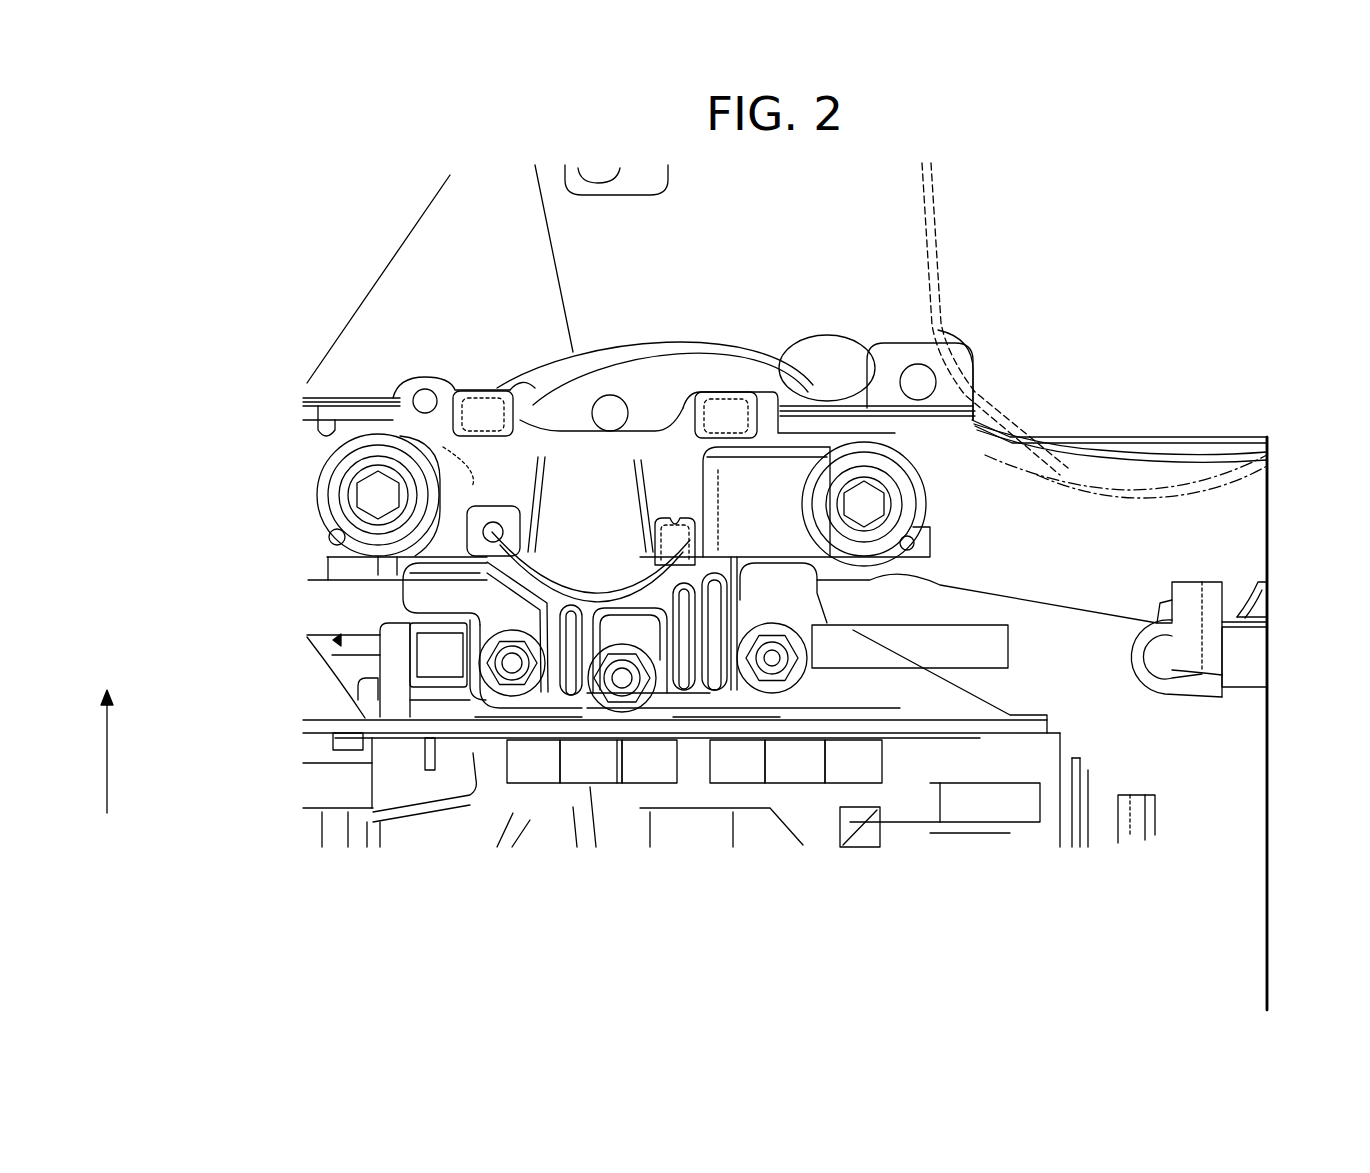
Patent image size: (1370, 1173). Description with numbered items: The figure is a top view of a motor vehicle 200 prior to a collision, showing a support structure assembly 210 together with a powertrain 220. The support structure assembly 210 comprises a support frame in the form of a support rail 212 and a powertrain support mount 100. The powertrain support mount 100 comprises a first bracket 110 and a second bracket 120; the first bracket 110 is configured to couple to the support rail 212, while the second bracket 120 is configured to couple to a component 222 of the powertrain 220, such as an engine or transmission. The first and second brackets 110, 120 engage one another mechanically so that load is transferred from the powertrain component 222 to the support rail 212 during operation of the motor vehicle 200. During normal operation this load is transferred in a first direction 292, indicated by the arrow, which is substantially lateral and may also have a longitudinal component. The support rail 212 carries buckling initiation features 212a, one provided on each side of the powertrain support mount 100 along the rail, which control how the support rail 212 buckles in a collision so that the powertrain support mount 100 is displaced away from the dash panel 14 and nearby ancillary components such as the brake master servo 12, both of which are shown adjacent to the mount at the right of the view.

The motor vehicle 200 is at (1140, 226).
The powertrain support mount 100 is at (698, 312).
The first bracket 110 is at (520, 470).
The second bracket 120 is at (427, 600).
The support structure assembly 210 is at (1212, 418).
The support rail 212 is at (990, 492).
The buckling initiation feature 212a is at (326, 437).
The powertrain 220 is at (450, 903).
The powertrain component 222 is at (640, 725).
The brake master servo 12 is at (1240, 658).
The dash panel 14 is at (1268, 890).
The first direction 292 is at (108, 762).